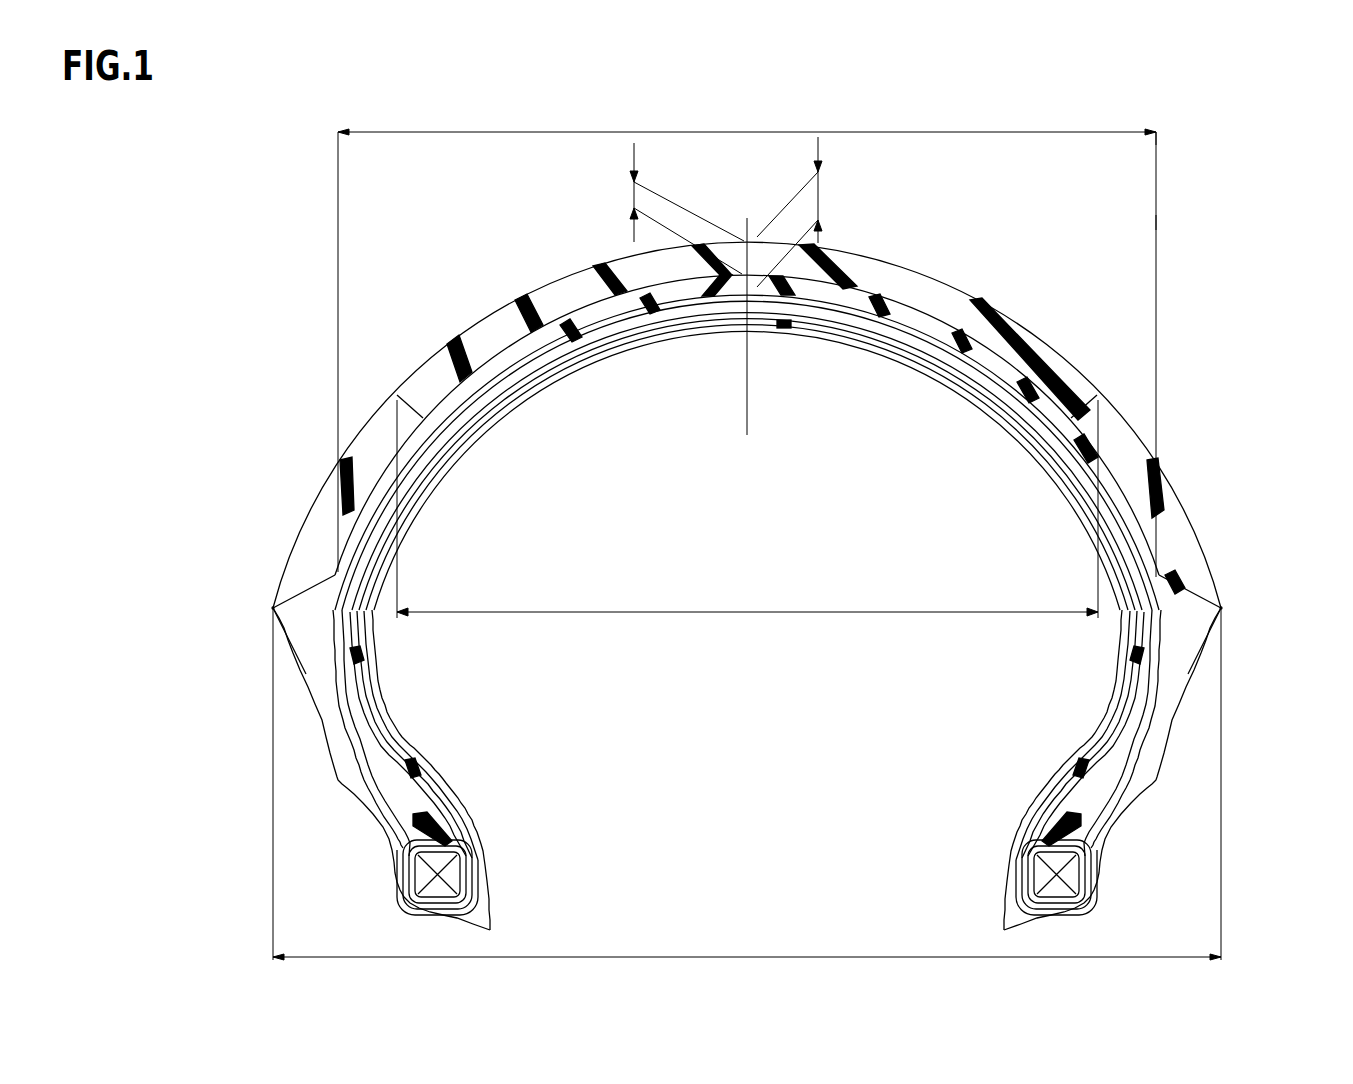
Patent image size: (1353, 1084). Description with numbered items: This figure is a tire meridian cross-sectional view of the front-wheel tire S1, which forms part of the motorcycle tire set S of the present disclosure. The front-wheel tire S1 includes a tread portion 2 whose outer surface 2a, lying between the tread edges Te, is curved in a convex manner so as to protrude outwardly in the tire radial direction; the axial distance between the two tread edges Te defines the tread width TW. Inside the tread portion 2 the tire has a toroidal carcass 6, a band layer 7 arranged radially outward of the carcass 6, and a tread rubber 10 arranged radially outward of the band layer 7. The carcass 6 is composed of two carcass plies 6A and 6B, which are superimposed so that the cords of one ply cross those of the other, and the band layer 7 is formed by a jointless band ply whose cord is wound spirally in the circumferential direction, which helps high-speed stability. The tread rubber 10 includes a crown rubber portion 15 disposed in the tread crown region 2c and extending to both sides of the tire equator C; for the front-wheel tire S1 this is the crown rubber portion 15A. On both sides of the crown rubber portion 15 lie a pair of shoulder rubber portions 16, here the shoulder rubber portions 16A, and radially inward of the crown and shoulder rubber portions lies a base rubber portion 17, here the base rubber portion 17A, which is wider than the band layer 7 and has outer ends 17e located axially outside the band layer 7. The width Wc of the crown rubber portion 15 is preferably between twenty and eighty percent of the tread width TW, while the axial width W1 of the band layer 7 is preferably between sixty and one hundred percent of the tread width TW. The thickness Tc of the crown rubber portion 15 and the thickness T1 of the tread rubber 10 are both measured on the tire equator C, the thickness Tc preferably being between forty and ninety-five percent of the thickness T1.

The tread portion 2 is at (743, 549).
The outer surface 2a is at (1212, 570).
The tread crown region 2c is at (914, 240).
The carcass 6 is at (747, 608).
The carcass ply 6A is at (1146, 673).
The carcass ply 6B is at (1114, 732).
The band layer 7 is at (1062, 465).
The tread rubber 10 is at (743, 439).
The crown rubber portion 15 is at (747, 385).
The crown rubber portion 15A is at (577, 293).
The shoulder rubber portion 16 is at (736, 501).
The shoulder rubber portion 16A is at (363, 463).
The base rubber portion 17 is at (747, 455).
The base rubber portion 17A is at (440, 410).
The outer end 17e is at (262, 642).
The tread edge Te is at (271, 608).
The thickness of crown rubber portion Tc is at (670, 208).
The thickness of tread rubber T1 is at (809, 212).
The axial width of band layer W1 is at (747, 335).
The width of crown rubber portion Wc is at (747, 509).
The tread width TW is at (747, 784).
The tire equator C is at (749, 309).
The motorcycle tire set S is at (1174, 145).
The front-wheel tire S1 is at (1179, 228).